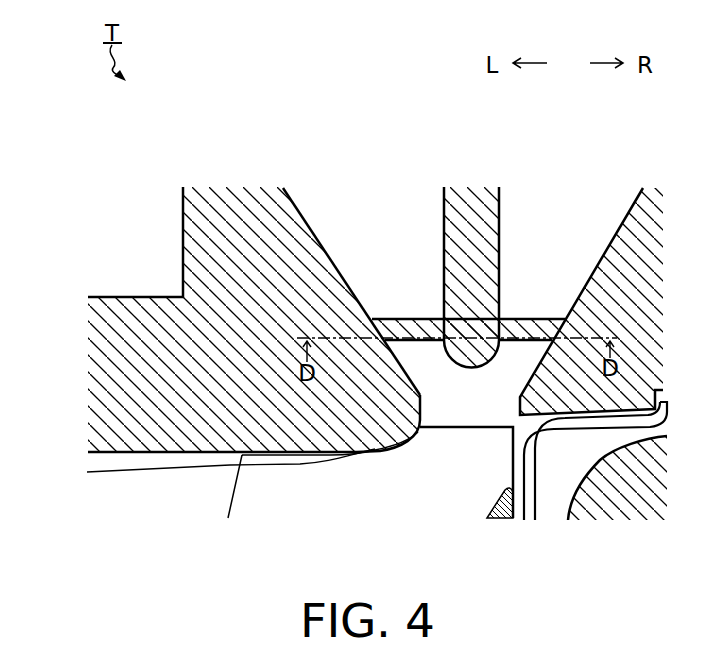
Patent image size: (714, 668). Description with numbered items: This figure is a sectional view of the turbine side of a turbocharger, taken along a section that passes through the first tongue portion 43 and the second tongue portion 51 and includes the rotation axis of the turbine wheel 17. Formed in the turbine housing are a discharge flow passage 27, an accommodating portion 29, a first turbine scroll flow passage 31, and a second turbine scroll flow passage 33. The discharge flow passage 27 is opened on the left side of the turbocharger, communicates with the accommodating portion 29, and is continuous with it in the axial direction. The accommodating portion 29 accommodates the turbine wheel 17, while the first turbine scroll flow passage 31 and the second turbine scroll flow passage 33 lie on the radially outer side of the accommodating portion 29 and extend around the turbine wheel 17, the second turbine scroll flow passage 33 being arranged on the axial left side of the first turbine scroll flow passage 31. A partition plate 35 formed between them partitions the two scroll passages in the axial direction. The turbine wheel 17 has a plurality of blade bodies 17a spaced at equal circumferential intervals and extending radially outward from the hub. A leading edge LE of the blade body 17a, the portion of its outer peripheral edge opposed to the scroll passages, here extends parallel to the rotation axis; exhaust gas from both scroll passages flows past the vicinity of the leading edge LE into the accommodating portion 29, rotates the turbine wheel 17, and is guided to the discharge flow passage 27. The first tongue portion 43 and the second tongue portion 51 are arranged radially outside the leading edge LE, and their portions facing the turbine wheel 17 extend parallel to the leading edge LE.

The turbine wheel 17 is at (116, 512).
The blade body 17a is at (236, 490).
The discharge flow passage 27 is at (132, 451).
The accommodating portion 29 is at (211, 469).
The first turbine scroll flow passage 31 is at (623, 223).
The second turbine scroll flow passage 33 is at (308, 226).
The partition plate 35 is at (499, 204).
The first tongue portion 43 is at (533, 317).
The second tongue portion 51 is at (408, 318).
The leading edge LE is at (472, 427).